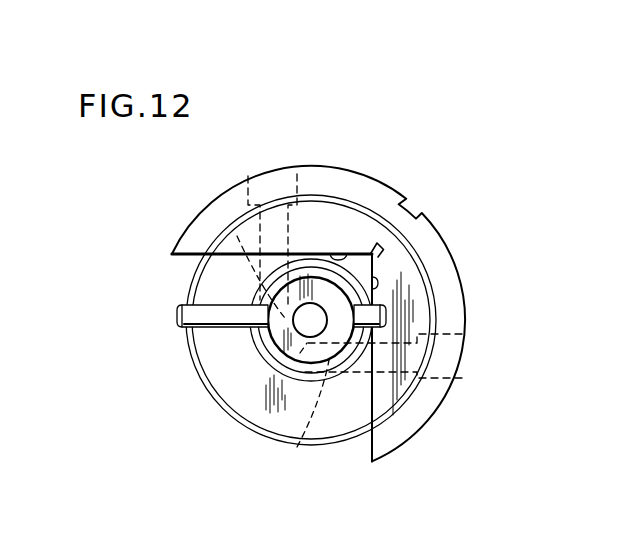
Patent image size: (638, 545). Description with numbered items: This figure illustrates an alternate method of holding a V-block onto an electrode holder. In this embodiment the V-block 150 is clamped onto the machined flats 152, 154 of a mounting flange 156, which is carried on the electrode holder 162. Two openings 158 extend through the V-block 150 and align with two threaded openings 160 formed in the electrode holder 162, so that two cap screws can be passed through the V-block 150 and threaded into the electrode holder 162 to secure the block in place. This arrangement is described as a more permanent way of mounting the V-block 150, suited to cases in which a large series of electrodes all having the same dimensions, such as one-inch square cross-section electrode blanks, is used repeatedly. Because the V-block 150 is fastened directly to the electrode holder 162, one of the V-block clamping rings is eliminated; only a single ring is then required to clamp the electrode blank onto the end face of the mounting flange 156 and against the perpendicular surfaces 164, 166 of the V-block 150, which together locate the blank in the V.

The V-block 150 is at (378, 204).
The machined flat 152 is at (219, 260).
The machined flat 154 is at (373, 390).
The mounting flange 156 is at (256, 391).
The opening 158 is at (277, 171).
The threaded opening 160 is at (268, 345).
The electrode holder 162 is at (278, 335).
The perpendicular surface 164 is at (373, 278).
The perpendicular surface 166 is at (324, 248).